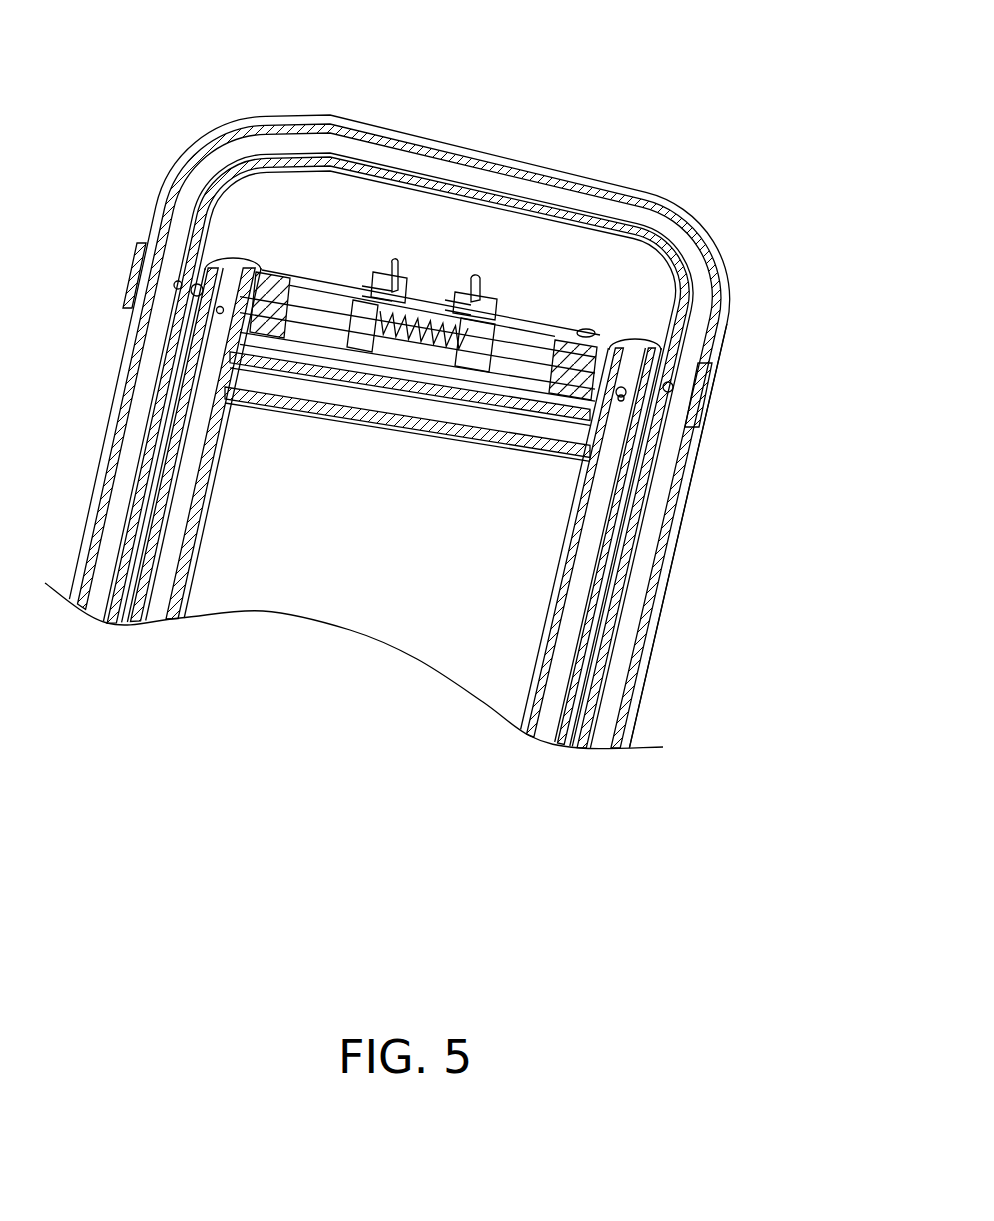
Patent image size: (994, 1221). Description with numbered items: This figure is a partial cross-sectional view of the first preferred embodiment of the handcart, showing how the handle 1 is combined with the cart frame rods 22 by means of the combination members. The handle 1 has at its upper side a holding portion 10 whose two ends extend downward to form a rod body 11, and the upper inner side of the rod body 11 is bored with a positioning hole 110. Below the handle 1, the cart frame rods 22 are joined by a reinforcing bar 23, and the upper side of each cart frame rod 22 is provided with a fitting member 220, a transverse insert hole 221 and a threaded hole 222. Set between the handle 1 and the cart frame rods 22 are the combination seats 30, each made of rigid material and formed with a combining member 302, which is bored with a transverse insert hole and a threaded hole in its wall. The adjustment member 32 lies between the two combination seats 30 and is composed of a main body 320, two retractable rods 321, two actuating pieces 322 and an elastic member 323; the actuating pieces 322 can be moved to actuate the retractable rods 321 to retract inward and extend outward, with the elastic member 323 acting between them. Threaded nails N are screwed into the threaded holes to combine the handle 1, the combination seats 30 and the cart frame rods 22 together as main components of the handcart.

The handle 1 is at (208, 116).
The holding portion 10 is at (452, 147).
The rod body 11 is at (672, 557).
The cart frame rod 22 is at (564, 555).
The reinforcing bar 23 is at (298, 412).
The combination seat 30 is at (133, 265).
The adjustment member 32 is at (345, 268).
The positioning hole 110 is at (673, 385).
The fitting member 220 is at (203, 262).
The transverse insert hole 221 is at (627, 390).
The threaded hole 222 is at (652, 349).
The combining member 302 is at (290, 290).
The main body 320 is at (521, 320).
The retractable rod 321 is at (517, 360).
The actuating piece 322 is at (472, 292).
The elastic member 323 is at (433, 343).
The threaded nail N is at (588, 330).